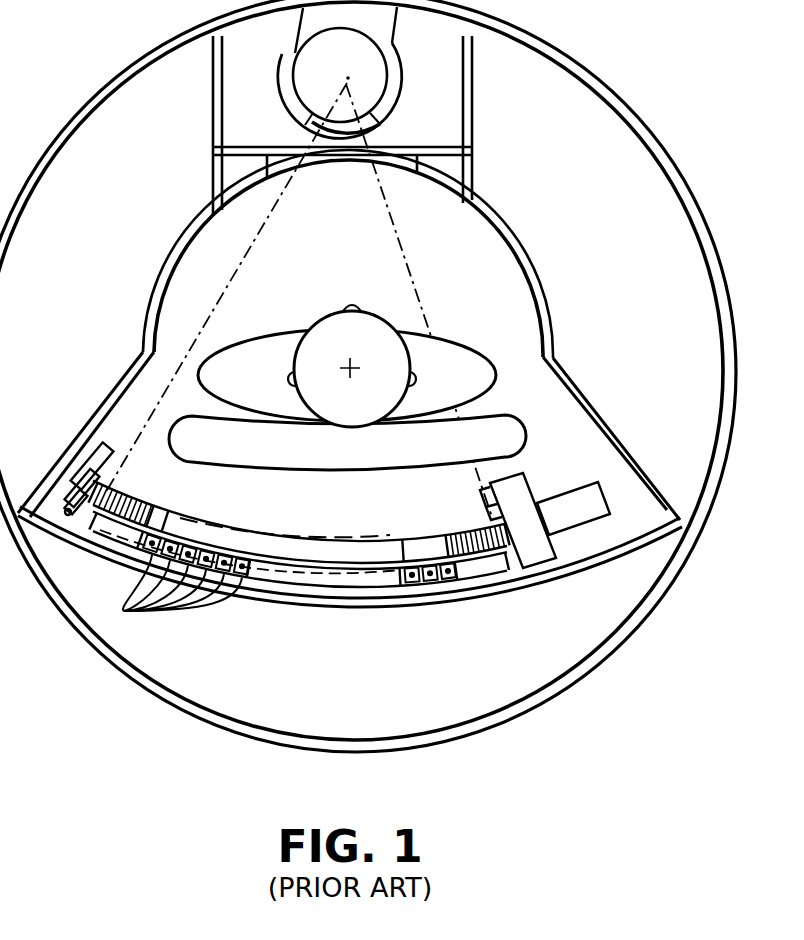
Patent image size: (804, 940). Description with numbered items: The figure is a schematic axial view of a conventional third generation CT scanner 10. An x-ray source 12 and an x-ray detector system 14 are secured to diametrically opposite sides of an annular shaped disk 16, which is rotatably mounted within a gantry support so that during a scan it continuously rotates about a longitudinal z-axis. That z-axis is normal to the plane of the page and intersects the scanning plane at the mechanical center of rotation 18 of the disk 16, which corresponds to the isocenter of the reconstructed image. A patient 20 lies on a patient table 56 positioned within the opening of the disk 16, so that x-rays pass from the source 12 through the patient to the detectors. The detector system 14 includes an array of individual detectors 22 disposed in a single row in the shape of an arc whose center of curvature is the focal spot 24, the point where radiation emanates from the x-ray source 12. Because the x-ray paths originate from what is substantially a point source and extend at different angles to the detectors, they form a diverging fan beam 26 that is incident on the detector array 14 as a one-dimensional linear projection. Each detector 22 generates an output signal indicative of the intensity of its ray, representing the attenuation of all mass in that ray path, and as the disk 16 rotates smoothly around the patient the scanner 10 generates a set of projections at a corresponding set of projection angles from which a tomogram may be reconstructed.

The scanner 10 is at (594, 689).
The x-ray source 12 is at (387, 110).
The x-ray detector system 14 is at (298, 540).
The annular shaped disk 16 is at (629, 106).
The mechanical center of rotation 18 is at (357, 368).
The patient 20 is at (467, 345).
The individual detectors 22 is at (136, 609).
The focal spot 24 is at (345, 72).
The fan beam 26 is at (393, 240).
The patient table 56 is at (513, 434).